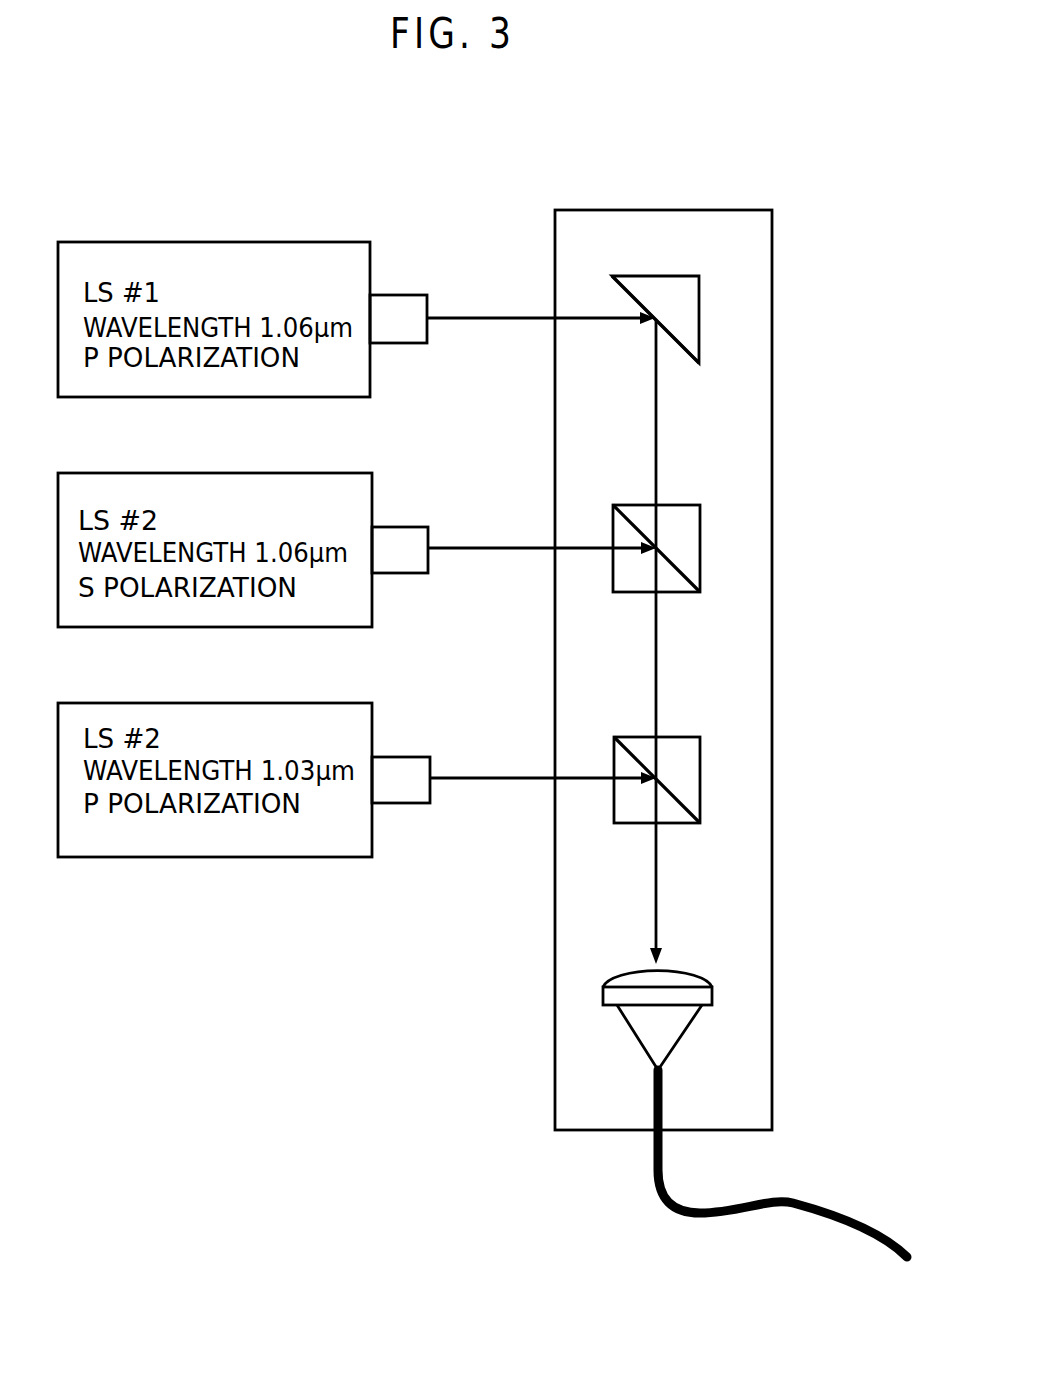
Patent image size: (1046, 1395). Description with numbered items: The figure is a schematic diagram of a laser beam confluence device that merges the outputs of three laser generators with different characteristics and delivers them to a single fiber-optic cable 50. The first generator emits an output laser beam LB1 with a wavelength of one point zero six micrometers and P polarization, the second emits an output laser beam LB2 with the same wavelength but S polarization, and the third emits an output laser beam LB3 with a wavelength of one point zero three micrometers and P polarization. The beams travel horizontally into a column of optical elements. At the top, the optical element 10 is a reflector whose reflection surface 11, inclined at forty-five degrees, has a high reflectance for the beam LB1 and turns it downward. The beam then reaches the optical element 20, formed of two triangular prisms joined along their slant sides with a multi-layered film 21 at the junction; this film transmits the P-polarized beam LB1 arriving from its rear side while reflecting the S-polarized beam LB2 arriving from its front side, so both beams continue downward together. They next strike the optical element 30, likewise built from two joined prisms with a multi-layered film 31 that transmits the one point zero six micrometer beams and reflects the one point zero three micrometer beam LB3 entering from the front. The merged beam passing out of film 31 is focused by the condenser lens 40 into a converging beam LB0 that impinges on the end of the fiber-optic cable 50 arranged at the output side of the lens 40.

The optical element 10 is at (687, 295).
The reflection surface 11 is at (680, 343).
The optical element 20 is at (680, 527).
The multi-layered film 21 is at (682, 570).
The optical element 30 is at (693, 752).
The multi-layered film 31 is at (692, 800).
The condenser lens 40 is at (687, 973).
The fiber-optic cable 50 is at (815, 1198).
The laser beam LB0 is at (668, 1030).
The output laser beam LB1 is at (476, 318).
The output laser beam LB2 is at (478, 547).
The output laser beam LB3 is at (478, 778).